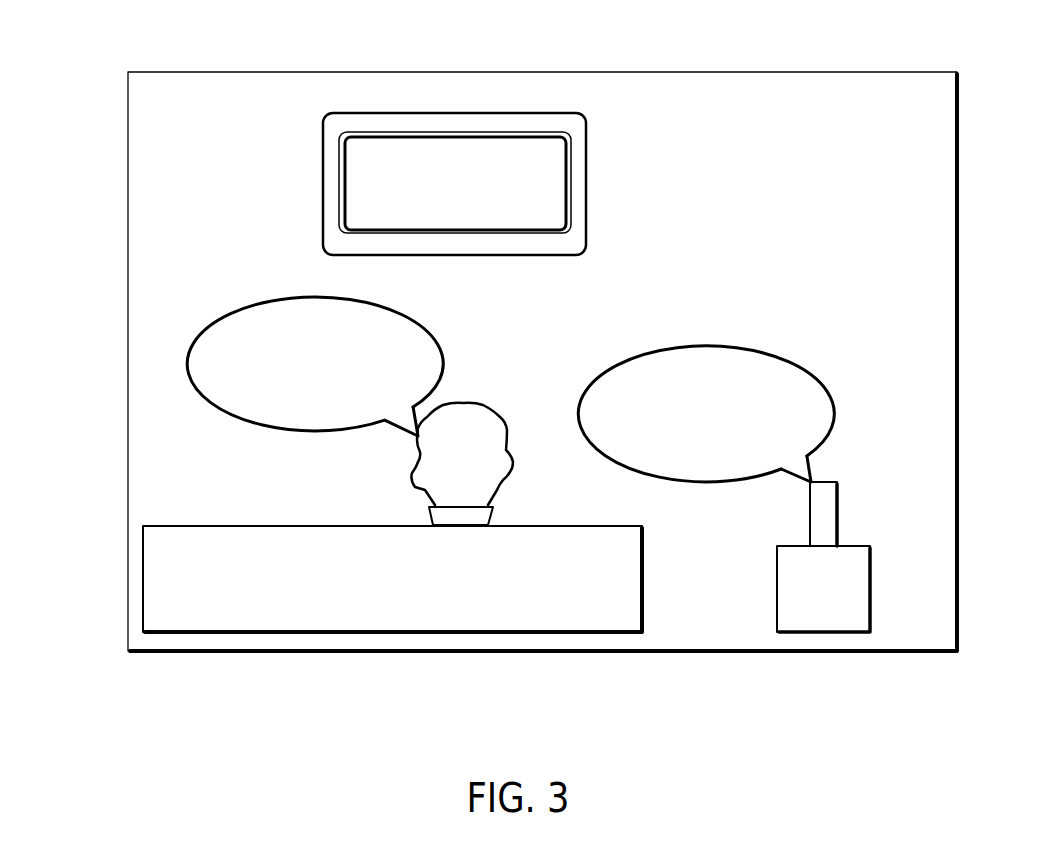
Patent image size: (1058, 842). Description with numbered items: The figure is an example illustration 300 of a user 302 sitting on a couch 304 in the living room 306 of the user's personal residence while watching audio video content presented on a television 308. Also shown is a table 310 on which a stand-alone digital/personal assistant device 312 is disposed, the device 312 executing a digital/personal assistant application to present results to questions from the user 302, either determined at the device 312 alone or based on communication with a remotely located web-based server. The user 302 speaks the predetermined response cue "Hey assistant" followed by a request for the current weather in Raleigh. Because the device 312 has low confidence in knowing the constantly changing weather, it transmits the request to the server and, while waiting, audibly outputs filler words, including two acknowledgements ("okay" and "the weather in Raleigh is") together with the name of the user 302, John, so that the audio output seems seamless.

The example illustration 300 is at (112, 47).
The user 302 is at (413, 467).
The couch 304 is at (143, 570).
The living room 306 is at (128, 350).
The television 308 is at (323, 186).
The table 310 is at (777, 588).
The stand-alone digital/personal assistant device 312 is at (810, 518).